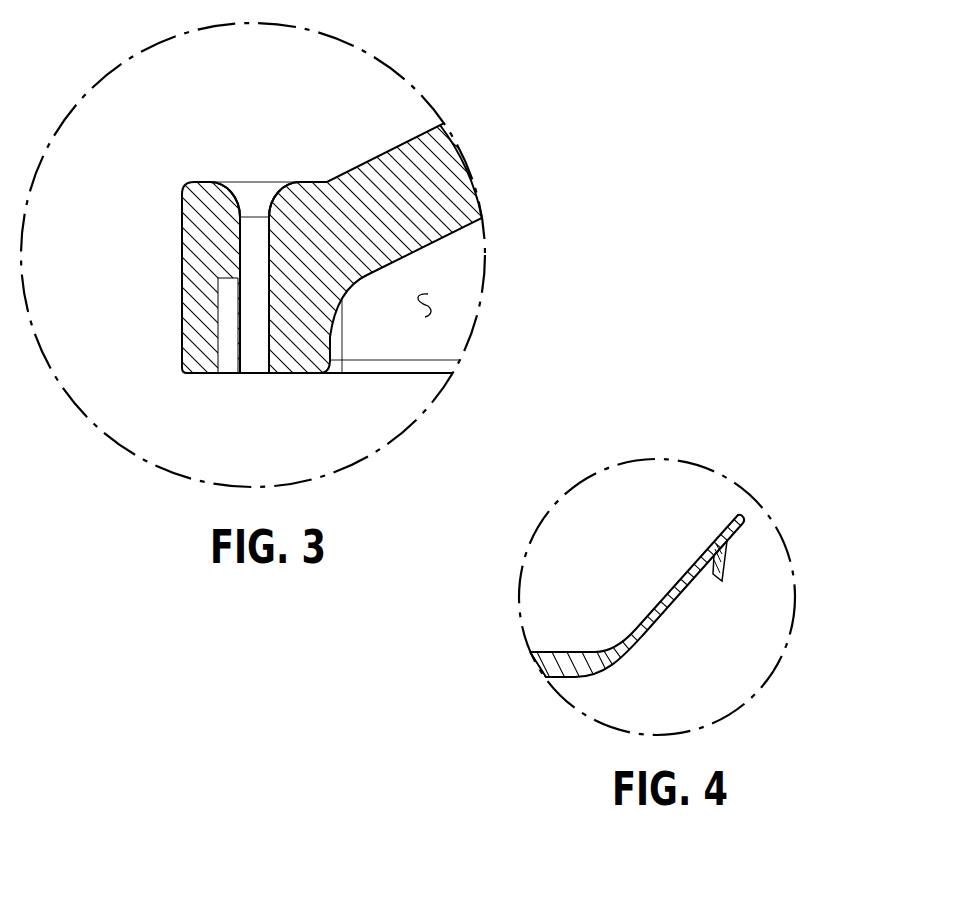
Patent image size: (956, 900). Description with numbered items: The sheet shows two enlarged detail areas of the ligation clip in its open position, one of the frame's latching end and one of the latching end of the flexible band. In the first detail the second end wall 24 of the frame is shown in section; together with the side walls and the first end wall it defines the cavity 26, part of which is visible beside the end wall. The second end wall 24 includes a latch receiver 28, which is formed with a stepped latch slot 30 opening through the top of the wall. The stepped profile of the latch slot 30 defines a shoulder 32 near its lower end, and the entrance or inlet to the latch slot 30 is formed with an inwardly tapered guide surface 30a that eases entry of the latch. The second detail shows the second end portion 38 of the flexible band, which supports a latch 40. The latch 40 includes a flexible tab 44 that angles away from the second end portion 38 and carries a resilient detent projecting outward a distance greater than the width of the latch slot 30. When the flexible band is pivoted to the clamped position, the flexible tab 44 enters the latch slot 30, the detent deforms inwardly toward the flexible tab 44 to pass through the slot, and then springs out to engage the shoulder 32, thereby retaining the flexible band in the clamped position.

In FIG. 3, the second end wall 24 is at (178, 274).
In FIG. 3, the cavity 26 is at (428, 294).
In FIG. 3, the latch receiver 28 is at (263, 172).
In FIG. 3, the latch slot 30 is at (260, 247).
In FIG. 3, the guide surface 30a is at (235, 195).
In FIG. 3, the shoulder 32 is at (235, 279).
In FIG. 4, the second end portion 38 is at (550, 677).
In FIG. 4, the latch 40 is at (713, 487).
In FIG. 4, the flexible tab 44 is at (655, 612).